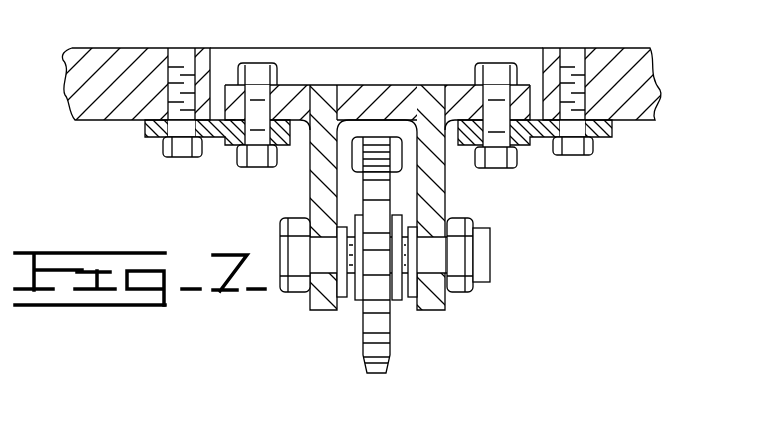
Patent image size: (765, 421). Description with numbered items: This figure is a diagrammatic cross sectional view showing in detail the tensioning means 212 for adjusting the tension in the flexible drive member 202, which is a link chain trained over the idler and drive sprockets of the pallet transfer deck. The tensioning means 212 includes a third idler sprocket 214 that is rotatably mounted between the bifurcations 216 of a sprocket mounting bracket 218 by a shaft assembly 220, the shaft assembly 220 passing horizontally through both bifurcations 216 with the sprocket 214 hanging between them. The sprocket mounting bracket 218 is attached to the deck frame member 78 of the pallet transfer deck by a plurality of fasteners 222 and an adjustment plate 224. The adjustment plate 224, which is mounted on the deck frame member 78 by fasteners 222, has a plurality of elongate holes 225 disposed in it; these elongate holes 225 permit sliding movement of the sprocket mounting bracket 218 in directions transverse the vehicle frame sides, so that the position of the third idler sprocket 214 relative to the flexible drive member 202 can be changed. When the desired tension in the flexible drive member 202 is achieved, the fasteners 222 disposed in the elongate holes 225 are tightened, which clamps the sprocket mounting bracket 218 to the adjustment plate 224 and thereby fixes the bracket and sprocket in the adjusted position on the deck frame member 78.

The deck frame member 78 is at (648, 98).
The flexible drive member 202 is at (376, 66).
The tensioning means 212 is at (490, 335).
The third idler sprocket 214 is at (363, 350).
The bifurcations 216 is at (312, 188).
The sprocket mounting bracket 218 is at (395, 97).
The shaft assembly 220 is at (491, 255).
The fasteners 222 is at (254, 72).
The adjustment plate 224 is at (213, 143).
The elongate holes 225 is at (270, 135).